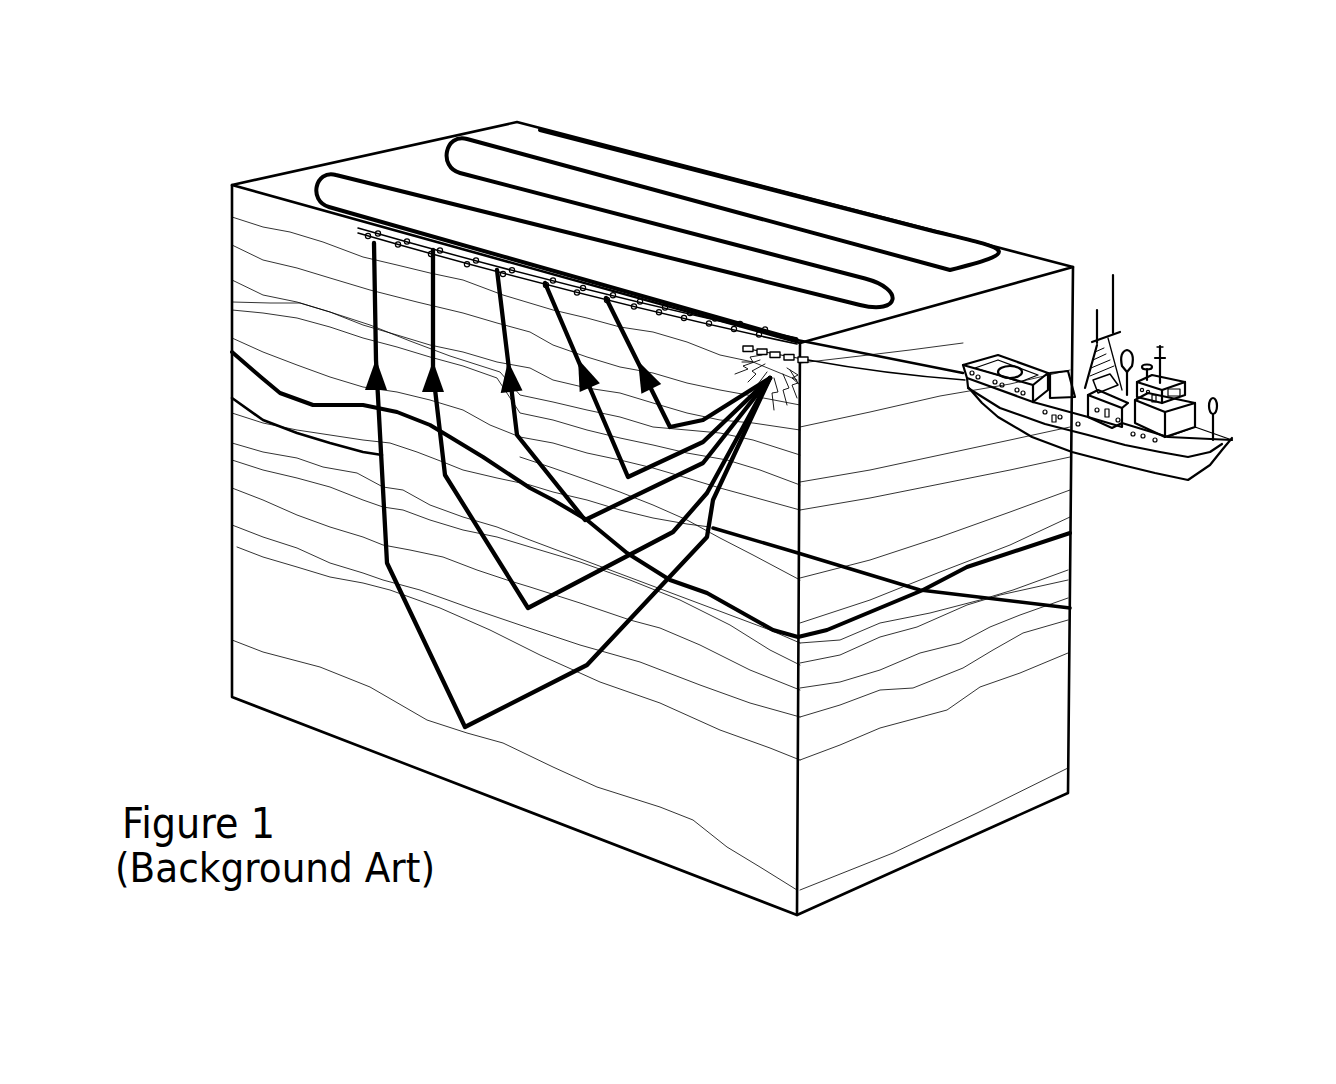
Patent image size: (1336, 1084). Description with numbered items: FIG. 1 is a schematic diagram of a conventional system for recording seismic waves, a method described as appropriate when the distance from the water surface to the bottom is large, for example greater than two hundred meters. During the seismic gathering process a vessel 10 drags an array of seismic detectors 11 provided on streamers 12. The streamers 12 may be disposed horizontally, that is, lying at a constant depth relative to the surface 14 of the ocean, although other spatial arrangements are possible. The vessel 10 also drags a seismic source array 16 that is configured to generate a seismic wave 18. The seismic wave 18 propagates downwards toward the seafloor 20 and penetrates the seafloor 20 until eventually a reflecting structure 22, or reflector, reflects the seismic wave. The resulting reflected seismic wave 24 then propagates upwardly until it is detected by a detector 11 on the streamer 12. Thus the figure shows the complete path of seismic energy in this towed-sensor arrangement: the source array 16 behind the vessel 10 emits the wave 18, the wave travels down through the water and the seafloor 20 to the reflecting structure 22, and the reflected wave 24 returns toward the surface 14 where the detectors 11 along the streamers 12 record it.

The vessel 10 is at (1190, 375).
The seismic detector 11 is at (508, 265).
The streamer 12 is at (576, 270).
The surface of the ocean 14 is at (410, 160).
The seismic source array 16 is at (800, 340).
The seismic wave 18 is at (1072, 608).
The seafloor 20 is at (1028, 537).
The reflecting structure 22 is at (292, 522).
The reflected seismic wave 24 is at (232, 398).